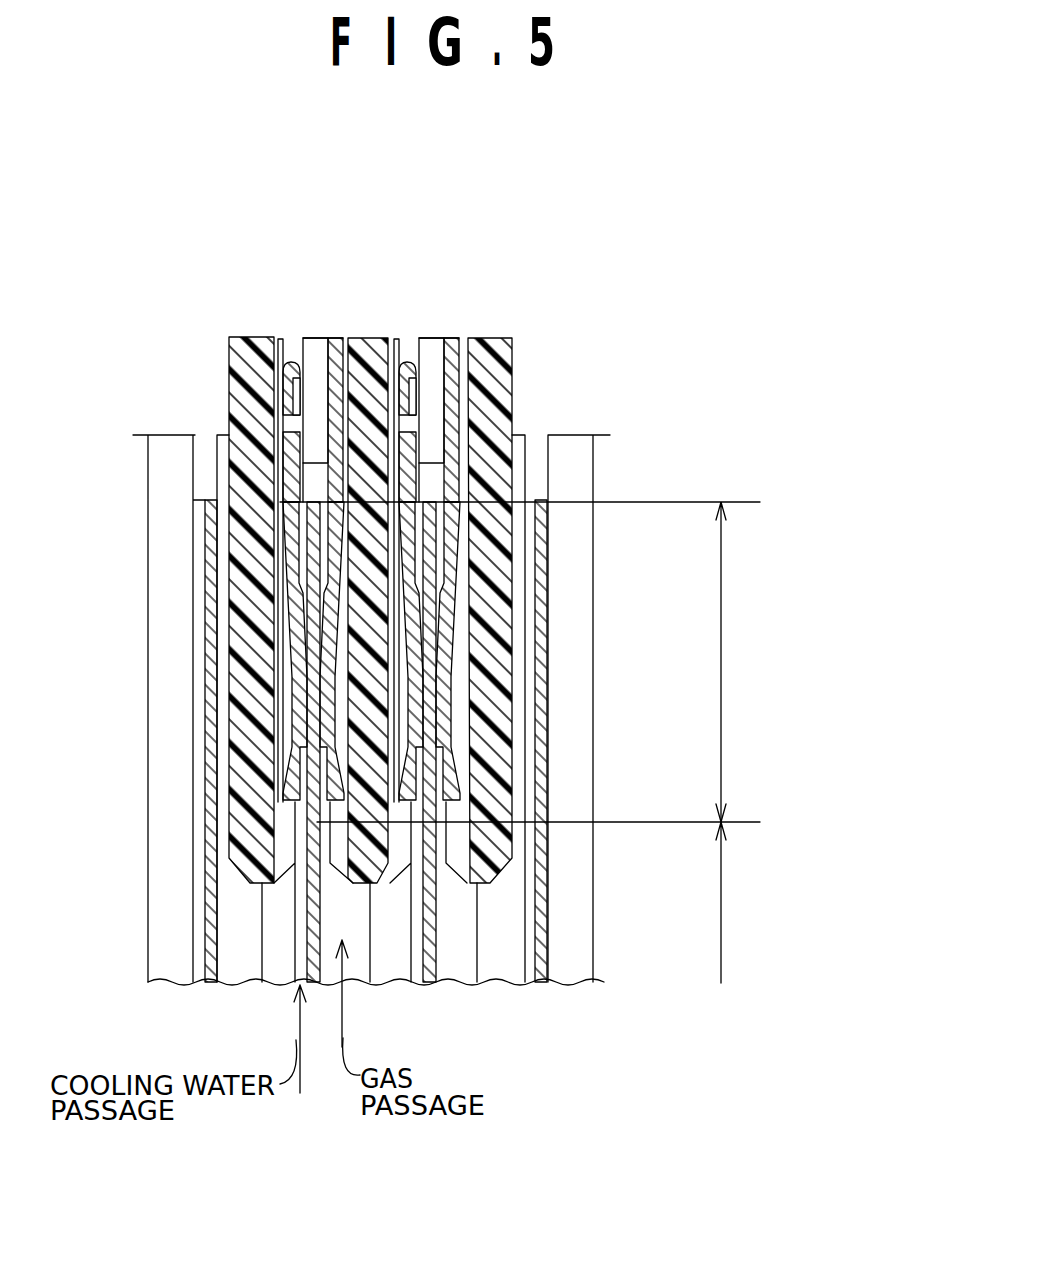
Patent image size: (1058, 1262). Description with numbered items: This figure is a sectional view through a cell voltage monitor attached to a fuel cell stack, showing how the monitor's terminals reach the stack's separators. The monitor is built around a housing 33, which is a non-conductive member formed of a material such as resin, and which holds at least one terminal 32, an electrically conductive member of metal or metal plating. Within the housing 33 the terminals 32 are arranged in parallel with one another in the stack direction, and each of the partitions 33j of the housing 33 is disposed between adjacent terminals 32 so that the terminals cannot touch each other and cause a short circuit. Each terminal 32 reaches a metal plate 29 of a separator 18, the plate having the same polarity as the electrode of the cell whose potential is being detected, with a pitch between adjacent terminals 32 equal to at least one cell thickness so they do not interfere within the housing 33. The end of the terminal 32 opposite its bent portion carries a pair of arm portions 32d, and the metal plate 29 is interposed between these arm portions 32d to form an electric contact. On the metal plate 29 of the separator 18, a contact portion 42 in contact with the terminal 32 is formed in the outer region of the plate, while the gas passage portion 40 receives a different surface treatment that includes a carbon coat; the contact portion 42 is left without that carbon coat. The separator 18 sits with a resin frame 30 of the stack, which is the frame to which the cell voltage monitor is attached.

The separator 18 is at (311, 972).
The metal plate 29 is at (210, 950).
The resin frame 30 is at (160, 896).
The terminal 32 is at (332, 417).
The arm portions 32d is at (323, 703).
The housing 33 is at (257, 360).
The partitions 33j is at (372, 848).
The gas passage portion 40 is at (722, 896).
The contact portion 42 is at (722, 635).